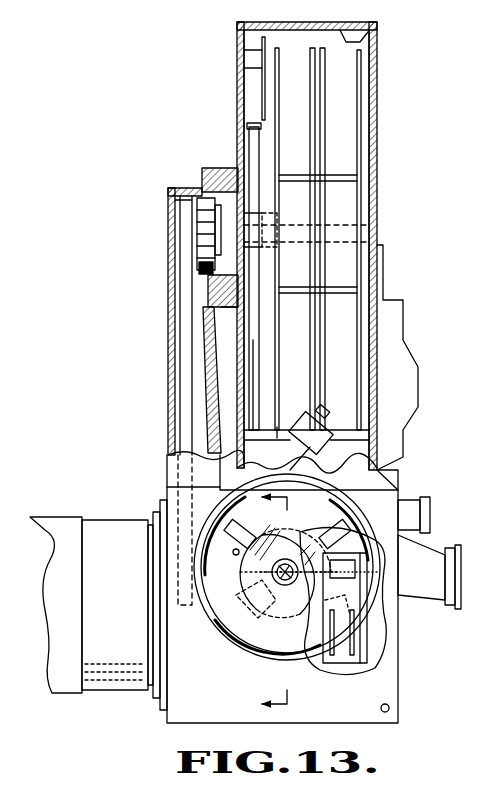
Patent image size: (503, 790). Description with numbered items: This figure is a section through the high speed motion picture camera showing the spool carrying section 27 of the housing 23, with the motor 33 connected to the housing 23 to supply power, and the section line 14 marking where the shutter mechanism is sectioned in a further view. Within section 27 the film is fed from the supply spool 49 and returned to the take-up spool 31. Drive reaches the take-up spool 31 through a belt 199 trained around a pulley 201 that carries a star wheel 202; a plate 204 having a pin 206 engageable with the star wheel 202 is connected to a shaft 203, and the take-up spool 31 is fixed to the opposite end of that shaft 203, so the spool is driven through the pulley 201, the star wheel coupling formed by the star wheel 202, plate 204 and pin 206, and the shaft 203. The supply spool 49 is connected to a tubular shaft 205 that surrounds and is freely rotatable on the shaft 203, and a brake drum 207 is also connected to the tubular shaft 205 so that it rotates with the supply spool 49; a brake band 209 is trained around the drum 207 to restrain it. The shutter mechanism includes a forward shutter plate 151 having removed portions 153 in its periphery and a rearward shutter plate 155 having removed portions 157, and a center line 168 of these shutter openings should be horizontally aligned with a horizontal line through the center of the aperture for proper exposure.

The section line 14 is at (269, 600).
The housing 23 is at (167, 723).
The spool carrying section 27 is at (377, 185).
The take-up spool 31 is at (343, 28).
The motor 33 is at (80, 518).
The supply spool 49 is at (340, 32).
The forward shutter plate 151 is at (252, 585).
The removed portions 153 is at (248, 570).
The rearward shutter plate 155 is at (228, 528).
The removed portions 157 is at (252, 542).
The center line 168 is at (268, 580).
The belt 199 is at (187, 350).
The pulley 201 is at (175, 222).
The star wheel 202 is at (200, 192).
The shaft 203 is at (362, 215).
The plate 204 is at (207, 272).
The tubular shaft 205 is at (267, 218).
The pin 206 is at (205, 232).
The brake drum 207 is at (253, 148).
The brake band 209 is at (247, 126).